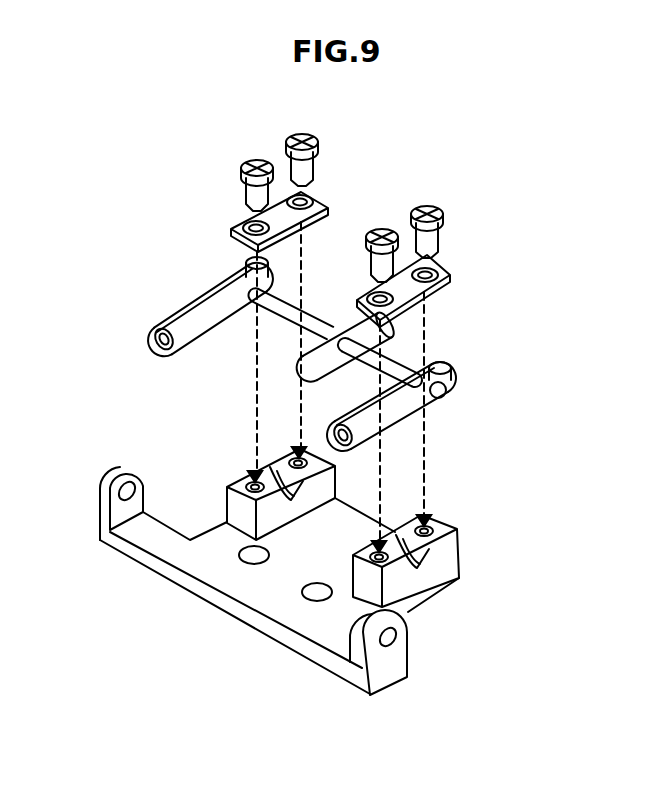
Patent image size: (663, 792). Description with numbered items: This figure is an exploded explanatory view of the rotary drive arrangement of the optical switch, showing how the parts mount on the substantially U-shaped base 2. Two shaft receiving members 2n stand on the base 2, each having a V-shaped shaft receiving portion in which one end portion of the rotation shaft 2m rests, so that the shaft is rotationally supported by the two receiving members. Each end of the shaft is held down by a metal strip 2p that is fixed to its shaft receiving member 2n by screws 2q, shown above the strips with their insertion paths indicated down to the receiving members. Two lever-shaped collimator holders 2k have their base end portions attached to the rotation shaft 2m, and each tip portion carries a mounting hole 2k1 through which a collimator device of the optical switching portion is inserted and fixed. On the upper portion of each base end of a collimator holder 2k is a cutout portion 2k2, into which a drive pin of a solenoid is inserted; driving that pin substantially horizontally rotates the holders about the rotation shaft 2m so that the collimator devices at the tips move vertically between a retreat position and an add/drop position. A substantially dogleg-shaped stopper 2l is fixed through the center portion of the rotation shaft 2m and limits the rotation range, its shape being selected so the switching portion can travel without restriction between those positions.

The base 2 is at (207, 611).
The shaft receiving member 2n is at (242, 512).
The collimator holder 2k is at (210, 318).
The mounting hole 2k1 is at (167, 360).
The cutout portion 2k2 is at (487, 341).
The rotation shaft 2m is at (273, 314).
The stopper 2l is at (329, 366).
The metal strip 2p is at (358, 292).
The screw 2q is at (257, 152).